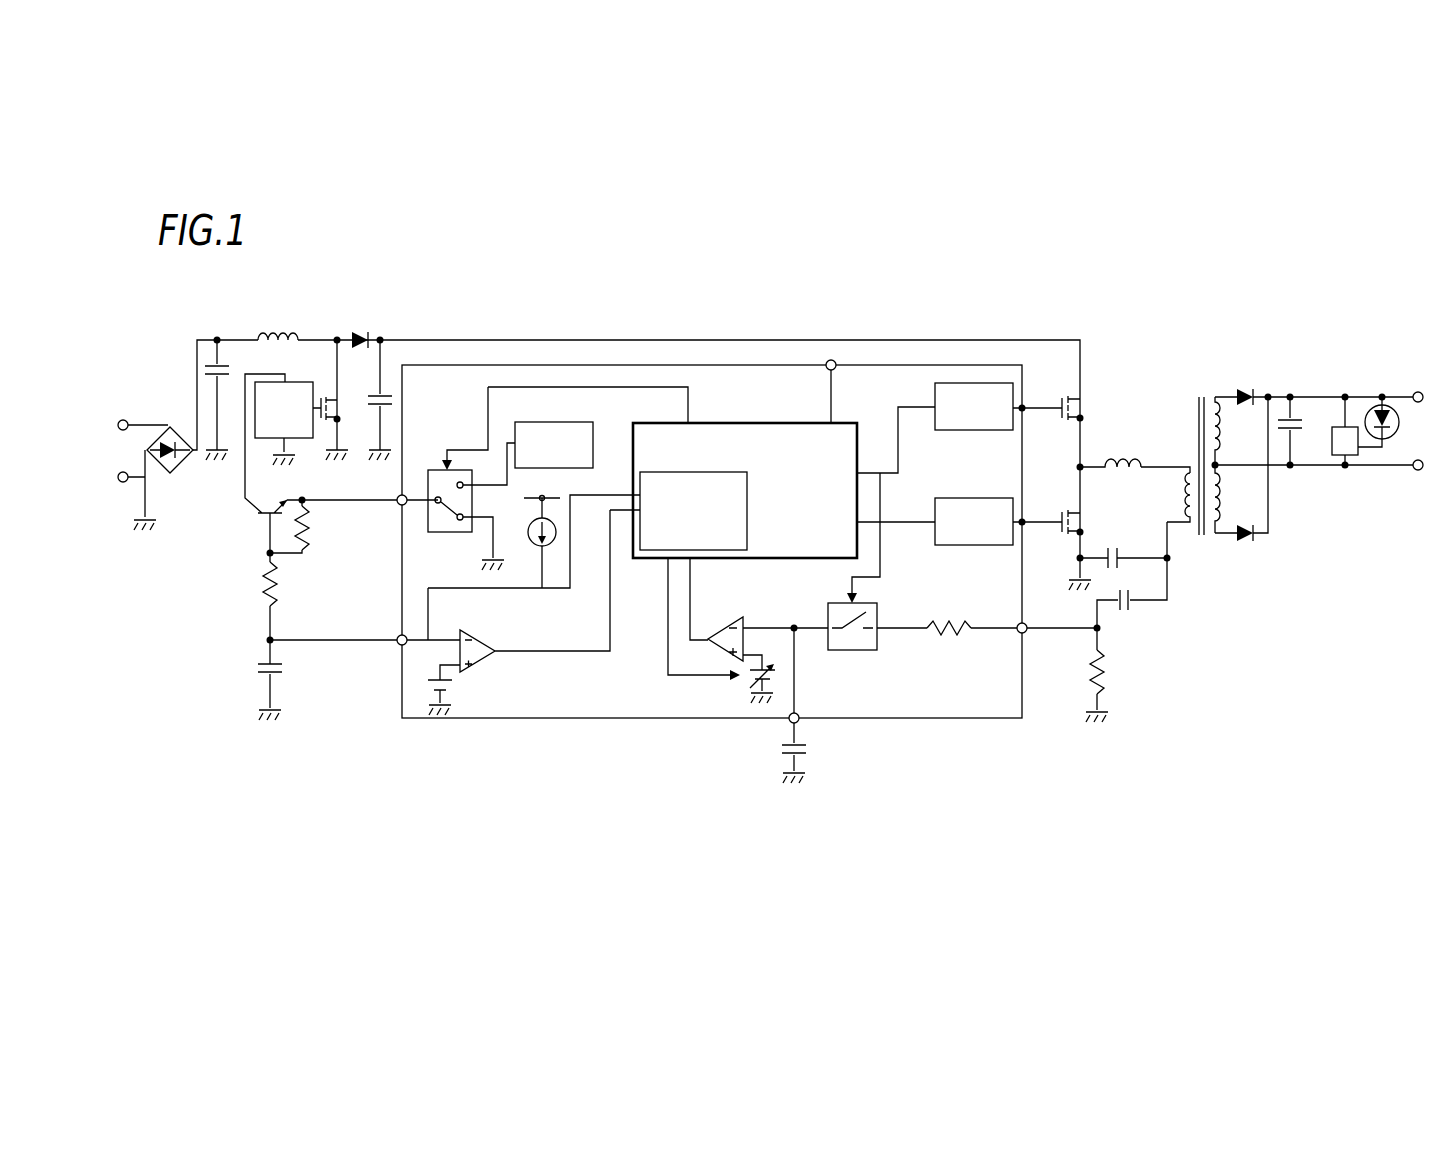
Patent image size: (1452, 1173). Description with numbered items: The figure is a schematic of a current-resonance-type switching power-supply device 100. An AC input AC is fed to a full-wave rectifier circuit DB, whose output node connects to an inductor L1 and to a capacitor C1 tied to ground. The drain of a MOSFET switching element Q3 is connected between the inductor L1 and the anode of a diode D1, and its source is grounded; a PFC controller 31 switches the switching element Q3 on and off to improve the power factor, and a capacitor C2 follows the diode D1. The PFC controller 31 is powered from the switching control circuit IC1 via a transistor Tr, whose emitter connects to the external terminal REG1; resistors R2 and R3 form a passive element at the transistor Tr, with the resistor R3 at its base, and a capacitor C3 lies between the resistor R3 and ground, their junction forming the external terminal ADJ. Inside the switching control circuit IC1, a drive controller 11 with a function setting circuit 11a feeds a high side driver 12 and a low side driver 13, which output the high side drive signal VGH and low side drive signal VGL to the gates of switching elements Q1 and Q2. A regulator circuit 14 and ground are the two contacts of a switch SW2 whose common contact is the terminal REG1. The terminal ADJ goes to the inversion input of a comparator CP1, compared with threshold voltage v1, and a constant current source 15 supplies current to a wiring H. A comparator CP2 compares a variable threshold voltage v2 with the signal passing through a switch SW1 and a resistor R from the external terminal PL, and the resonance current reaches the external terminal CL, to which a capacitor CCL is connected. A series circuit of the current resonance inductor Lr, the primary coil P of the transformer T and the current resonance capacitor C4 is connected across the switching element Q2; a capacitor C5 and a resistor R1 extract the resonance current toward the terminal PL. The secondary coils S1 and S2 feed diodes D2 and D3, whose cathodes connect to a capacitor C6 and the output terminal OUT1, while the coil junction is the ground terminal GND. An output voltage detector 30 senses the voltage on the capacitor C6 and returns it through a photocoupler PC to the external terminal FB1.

The switching power-supply device 100 is at (1146, 297).
The drive controller 11 is at (745, 469).
The function setting circuit 11a is at (747, 497).
The high side driver 12 is at (948, 430).
The low side driver 13 is at (948, 545).
The regulator circuit 14 is at (546, 422).
The constant current source 15 is at (538, 546).
The output voltage detector 30 is at (1340, 458).
The PFC controller 31 is at (290, 382).
The switching control circuit IC1 is at (450, 720).
The AC input AC is at (136, 451).
The full-wave rectifier circuit DB is at (193, 438).
The capacitor C1 is at (238, 373).
The inductor L1 is at (258, 339).
The switching element Q3 is at (330, 409).
The diode D1 is at (357, 331).
The capacitor C2 is at (396, 402).
The transistor Tr is at (252, 507).
The external terminal REG1 is at (397, 496).
The resistor R2 is at (310, 526).
The resistor R3 is at (263, 604).
The external terminal ADJ is at (398, 646).
The capacitor C3 is at (281, 675).
The switch SW2 is at (450, 532).
The comparator CP1 is at (484, 660).
The threshold voltage v1 is at (450, 690).
The wiring H is at (490, 589).
The external terminal FB1 is at (831, 358).
The comparator CP2 is at (734, 620).
The threshold voltage v2 is at (767, 679).
The switch SW1 is at (846, 650).
The resistor R is at (950, 626).
The external terminal PL is at (1026, 633).
The external terminal CL is at (802, 724).
The capacitor CCL is at (775, 753).
The high side drive signal VGH is at (1037, 420).
The low side drive signal VGL is at (1037, 517).
The switching element Q1 is at (1072, 401).
The switching element Q2 is at (1072, 515).
The current resonance inductor Lr is at (1110, 445).
The current resonance capacitor C4 is at (1118, 552).
The capacitor C5 is at (1129, 608).
The resistor R1 is at (1110, 672).
The transformer T is at (1208, 451).
The primary coil P is at (1183, 475).
The secondary coil S1 is at (1220, 406).
The secondary coil S2 is at (1220, 527).
The diode D2 is at (1241, 392).
The diode D3 is at (1243, 541).
The capacitor C6 is at (1298, 416).
The photocoupler PC is at (1390, 405).
The output terminal OUT1 is at (1414, 388).
The ground terminal GND is at (1417, 479).